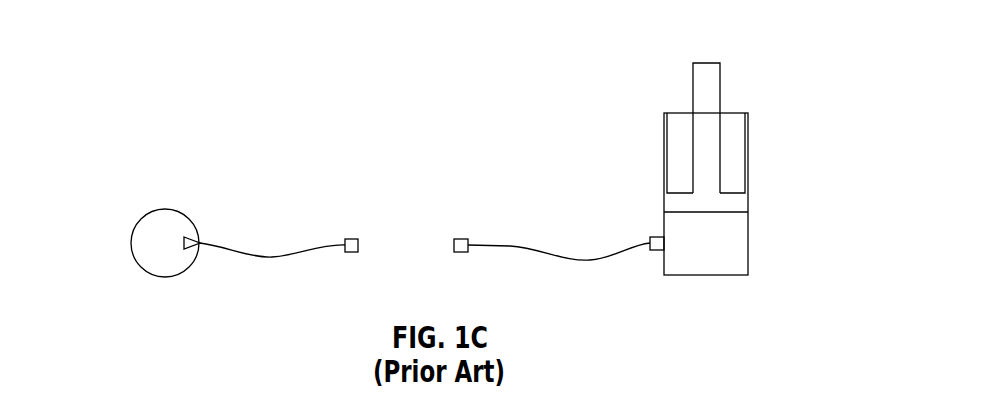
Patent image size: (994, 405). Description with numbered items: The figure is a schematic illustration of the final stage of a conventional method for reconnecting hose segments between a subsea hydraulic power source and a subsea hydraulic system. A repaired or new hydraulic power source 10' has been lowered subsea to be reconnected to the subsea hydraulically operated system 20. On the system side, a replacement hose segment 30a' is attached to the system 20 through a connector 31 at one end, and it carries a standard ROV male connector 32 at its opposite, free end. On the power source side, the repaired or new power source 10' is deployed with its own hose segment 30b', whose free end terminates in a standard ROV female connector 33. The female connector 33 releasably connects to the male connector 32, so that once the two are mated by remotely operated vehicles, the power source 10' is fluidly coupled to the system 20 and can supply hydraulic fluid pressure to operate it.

The repaired or new hydraulic power source 10' is at (129, 243).
The subsea hydraulically operated system 20 is at (748, 243).
The replacement hose segment 30a' is at (559, 239).
The hose segment 30b' is at (272, 238).
The connector 31 is at (652, 237).
The standard ROV male connector 32 is at (461, 239).
The standard ROV female connector 33 is at (352, 239).